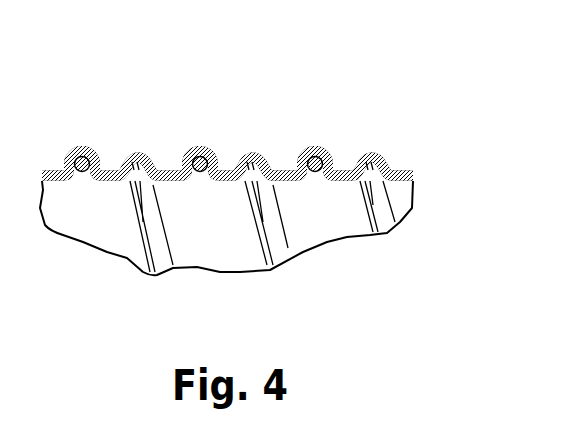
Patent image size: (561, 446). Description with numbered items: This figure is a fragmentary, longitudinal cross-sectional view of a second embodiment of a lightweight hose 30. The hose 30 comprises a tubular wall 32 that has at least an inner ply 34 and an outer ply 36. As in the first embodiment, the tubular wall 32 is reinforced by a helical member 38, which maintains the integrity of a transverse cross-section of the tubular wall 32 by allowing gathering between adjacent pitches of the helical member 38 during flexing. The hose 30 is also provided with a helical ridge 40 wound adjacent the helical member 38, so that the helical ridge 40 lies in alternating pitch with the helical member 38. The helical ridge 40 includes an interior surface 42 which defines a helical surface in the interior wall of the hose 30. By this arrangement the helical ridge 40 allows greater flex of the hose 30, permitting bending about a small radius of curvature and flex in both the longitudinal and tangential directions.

The lightweight hose 30 is at (241, 178).
The tubular wall 32 is at (237, 257).
The inner ply 34 is at (333, 178).
The outer ply 36 is at (288, 165).
The helical member 38 is at (86, 147).
The helical ridge 40 is at (157, 157).
The interior surface 42 is at (140, 167).